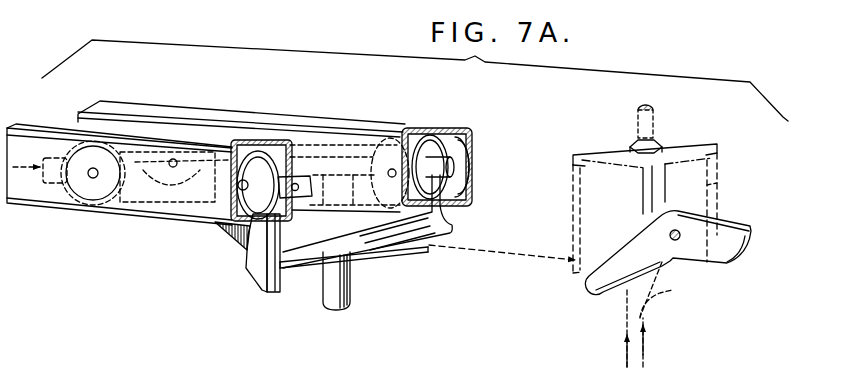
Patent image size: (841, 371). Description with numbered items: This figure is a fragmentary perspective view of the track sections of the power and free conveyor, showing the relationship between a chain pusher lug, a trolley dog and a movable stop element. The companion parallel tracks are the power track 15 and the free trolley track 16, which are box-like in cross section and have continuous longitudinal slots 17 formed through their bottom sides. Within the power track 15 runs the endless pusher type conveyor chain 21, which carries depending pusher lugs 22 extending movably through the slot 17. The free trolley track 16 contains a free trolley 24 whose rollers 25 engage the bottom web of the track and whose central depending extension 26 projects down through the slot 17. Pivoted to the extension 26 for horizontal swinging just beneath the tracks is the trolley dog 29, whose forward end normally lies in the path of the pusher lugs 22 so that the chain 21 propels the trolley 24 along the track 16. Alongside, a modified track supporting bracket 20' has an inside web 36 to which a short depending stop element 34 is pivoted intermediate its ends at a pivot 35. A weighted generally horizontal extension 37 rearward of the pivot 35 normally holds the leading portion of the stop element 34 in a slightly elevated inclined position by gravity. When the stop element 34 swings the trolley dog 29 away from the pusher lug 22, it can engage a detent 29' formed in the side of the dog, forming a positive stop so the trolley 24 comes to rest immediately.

The power track 15 is at (51, 128).
The free trolley track 16 is at (220, 110).
The longitudinal slot 17 is at (257, 217).
The modified track supporting bracket 20' is at (670, 189).
The conveyor chain 21 is at (272, 160).
The pusher lug 22 is at (255, 265).
The free trolley 24 is at (443, 167).
The roller 25 is at (450, 145).
The depending extension 26 is at (352, 290).
The trolley dog 29 is at (354, 289).
The detent 29' is at (367, 226).
The stop element 34 is at (632, 252).
The pivot 35 is at (680, 240).
The inside web 36 is at (713, 185).
The weighted horizontal extension 37 is at (728, 233).